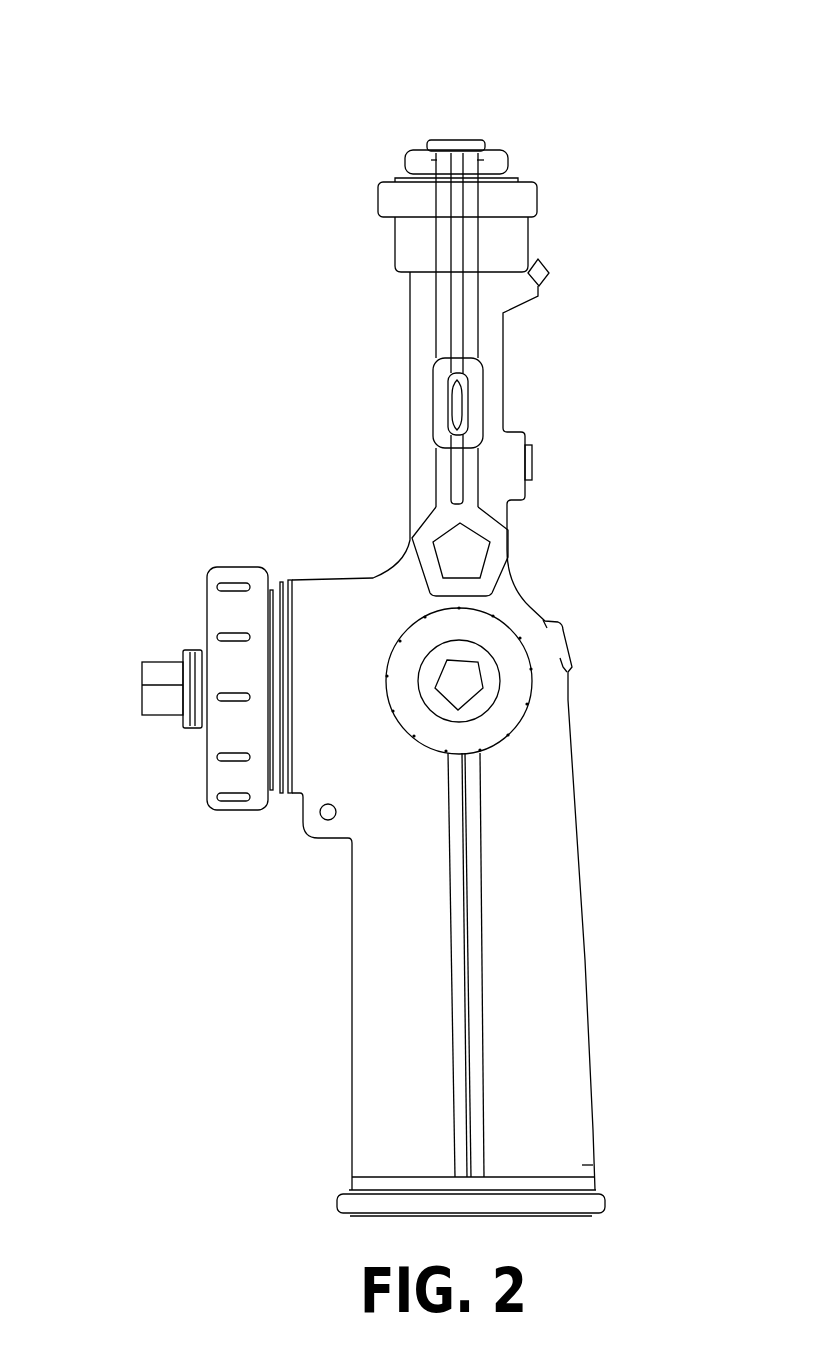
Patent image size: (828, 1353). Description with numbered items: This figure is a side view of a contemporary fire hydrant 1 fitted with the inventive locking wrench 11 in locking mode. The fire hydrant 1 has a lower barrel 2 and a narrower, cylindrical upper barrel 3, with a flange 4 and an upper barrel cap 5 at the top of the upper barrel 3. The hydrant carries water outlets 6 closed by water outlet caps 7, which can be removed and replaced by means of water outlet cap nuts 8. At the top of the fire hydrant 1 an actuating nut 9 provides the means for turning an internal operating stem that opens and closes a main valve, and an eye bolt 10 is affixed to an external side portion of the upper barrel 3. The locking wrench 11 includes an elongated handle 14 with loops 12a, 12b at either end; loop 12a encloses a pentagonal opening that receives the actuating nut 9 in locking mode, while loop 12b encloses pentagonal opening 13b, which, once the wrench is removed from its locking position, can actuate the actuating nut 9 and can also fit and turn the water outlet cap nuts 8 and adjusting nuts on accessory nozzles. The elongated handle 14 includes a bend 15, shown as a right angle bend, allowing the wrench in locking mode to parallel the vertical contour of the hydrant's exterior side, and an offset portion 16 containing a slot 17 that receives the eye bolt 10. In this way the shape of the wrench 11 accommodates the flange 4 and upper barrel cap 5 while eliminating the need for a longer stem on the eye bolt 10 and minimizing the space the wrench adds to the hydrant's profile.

The fire hydrant 1 is at (234, 56).
The lower barrel 2 is at (596, 960).
The upper barrel 3 is at (515, 320).
The flange 4 is at (522, 242).
The upper barrel cap 5 is at (537, 185).
The water outlets 6 is at (400, 637).
The water outlet caps 7 is at (210, 805).
The water outlet cap nuts 8 is at (470, 685).
The actuating nut 9 is at (460, 140).
The eye bolt 10 is at (475, 395).
The locking wrench 11 is at (427, 310).
The loop 12a is at (411, 144).
The loop 12b is at (510, 523).
The pentagonal opening 13b is at (470, 568).
The elongated handle 14 is at (427, 342).
The bend 15 is at (483, 167).
The offset portion 16 is at (470, 435).
The slot 17 is at (447, 413).